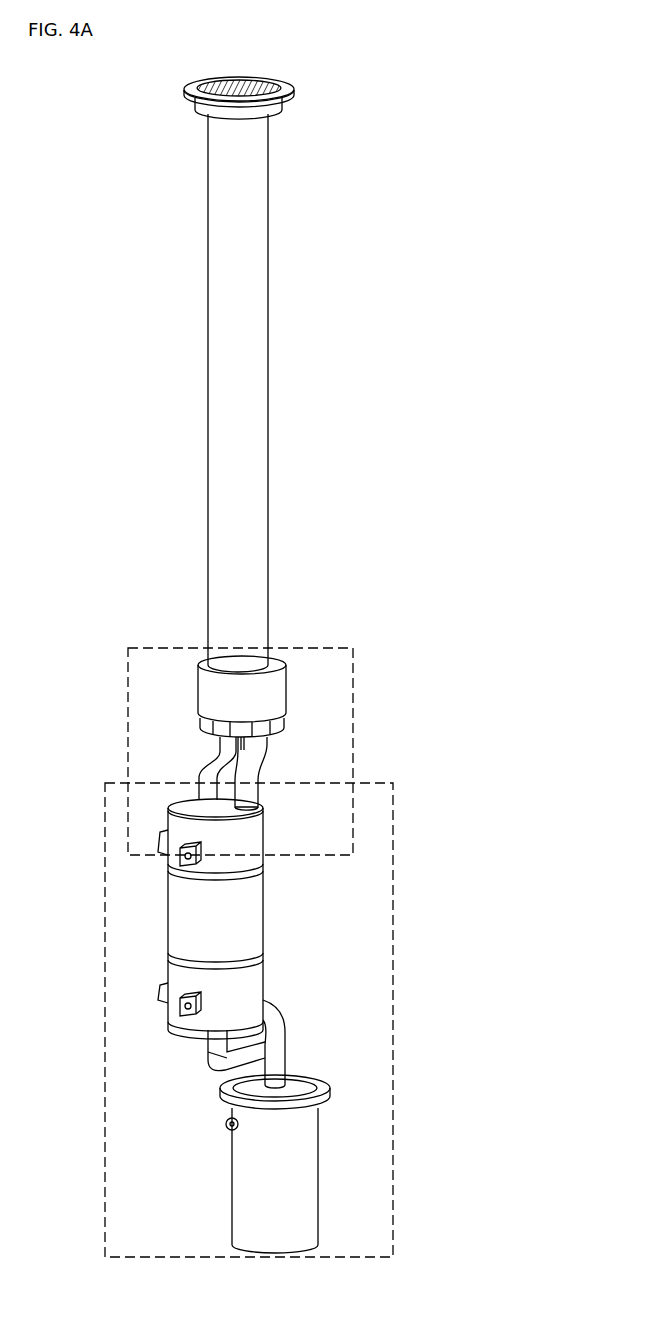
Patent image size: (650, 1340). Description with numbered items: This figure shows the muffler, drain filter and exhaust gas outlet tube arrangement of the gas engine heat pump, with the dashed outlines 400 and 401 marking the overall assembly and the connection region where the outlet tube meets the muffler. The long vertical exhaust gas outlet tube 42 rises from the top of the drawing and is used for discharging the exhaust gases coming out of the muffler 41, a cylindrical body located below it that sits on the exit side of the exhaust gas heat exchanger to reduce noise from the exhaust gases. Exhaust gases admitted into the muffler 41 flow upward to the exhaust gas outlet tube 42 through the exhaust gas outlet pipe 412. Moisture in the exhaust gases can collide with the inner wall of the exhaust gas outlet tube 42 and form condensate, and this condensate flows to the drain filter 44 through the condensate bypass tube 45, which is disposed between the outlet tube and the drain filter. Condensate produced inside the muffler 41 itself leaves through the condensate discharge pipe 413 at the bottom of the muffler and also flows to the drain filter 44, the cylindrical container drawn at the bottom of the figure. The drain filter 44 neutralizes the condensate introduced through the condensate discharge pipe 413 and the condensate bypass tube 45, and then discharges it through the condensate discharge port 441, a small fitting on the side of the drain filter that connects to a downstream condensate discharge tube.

The exhaust gas outlet tube 42 is at (253, 268).
The connector assembly 401 is at (353, 675).
The exhaust gas outlet pipe 412 is at (265, 745).
The condensate bypass tube 45 is at (208, 770).
The muffler 41 is at (265, 912).
The condensate discharge pipe 413 is at (212, 1062).
The drain filter 44 is at (298, 1163).
The condensate discharge port 441 is at (225, 1128).
The module 400 is at (393, 1015).